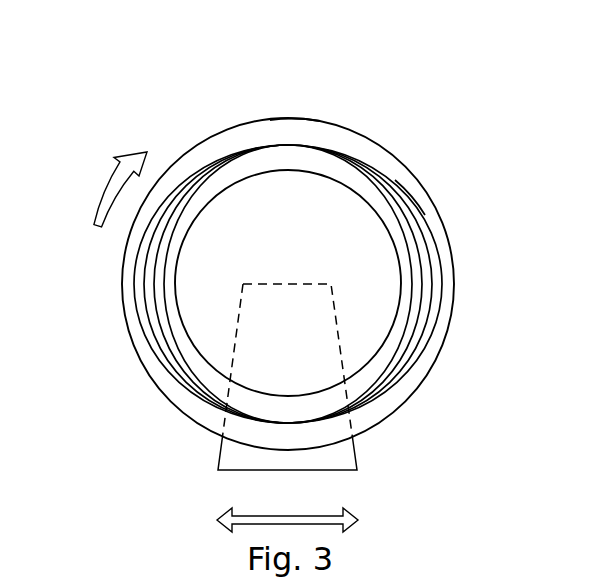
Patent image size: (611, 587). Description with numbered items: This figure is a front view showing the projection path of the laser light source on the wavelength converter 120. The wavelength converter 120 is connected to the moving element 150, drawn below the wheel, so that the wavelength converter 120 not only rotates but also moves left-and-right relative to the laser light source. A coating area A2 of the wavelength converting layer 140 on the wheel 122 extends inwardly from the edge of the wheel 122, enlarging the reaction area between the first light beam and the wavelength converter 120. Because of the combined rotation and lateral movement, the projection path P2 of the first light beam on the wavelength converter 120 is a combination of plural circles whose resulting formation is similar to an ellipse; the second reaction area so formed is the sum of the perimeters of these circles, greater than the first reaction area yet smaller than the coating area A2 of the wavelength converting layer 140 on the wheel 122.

The wavelength converter 120 is at (304, 248).
The wheel 122 is at (455, 275).
The wavelength converting layer 140 is at (265, 133).
The coating area A2 is at (310, 133).
The projection path P2 is at (413, 200).
The moving element 150 is at (335, 460).